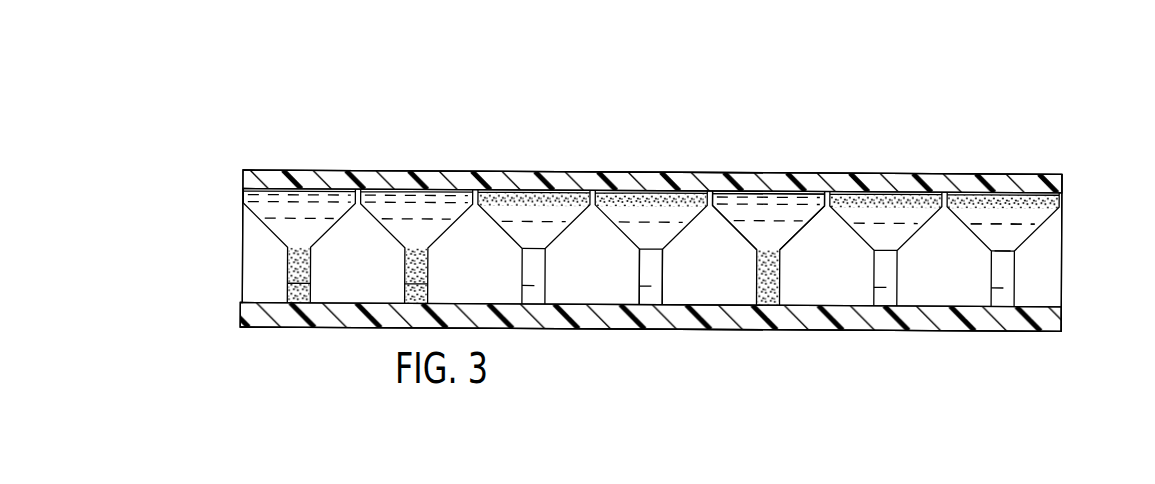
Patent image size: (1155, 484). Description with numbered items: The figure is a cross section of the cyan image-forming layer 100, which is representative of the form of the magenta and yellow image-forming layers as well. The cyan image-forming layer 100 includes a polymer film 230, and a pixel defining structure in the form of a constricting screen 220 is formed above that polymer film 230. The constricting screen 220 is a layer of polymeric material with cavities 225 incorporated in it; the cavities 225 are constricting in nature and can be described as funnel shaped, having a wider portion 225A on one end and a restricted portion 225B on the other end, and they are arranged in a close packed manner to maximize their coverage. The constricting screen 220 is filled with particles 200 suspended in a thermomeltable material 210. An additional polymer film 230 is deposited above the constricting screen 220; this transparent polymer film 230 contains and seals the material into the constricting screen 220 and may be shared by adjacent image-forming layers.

The cyan image-forming layer 100 is at (297, 140).
The particles 200 is at (990, 200).
The thermomeltable material 210 is at (1023, 220).
The constricting screen 220 is at (1045, 263).
The cavities 225 is at (537, 213).
The wider portion 225A is at (782, 200).
The restricted portion 225B is at (650, 295).
The polymer film 230 is at (248, 182).